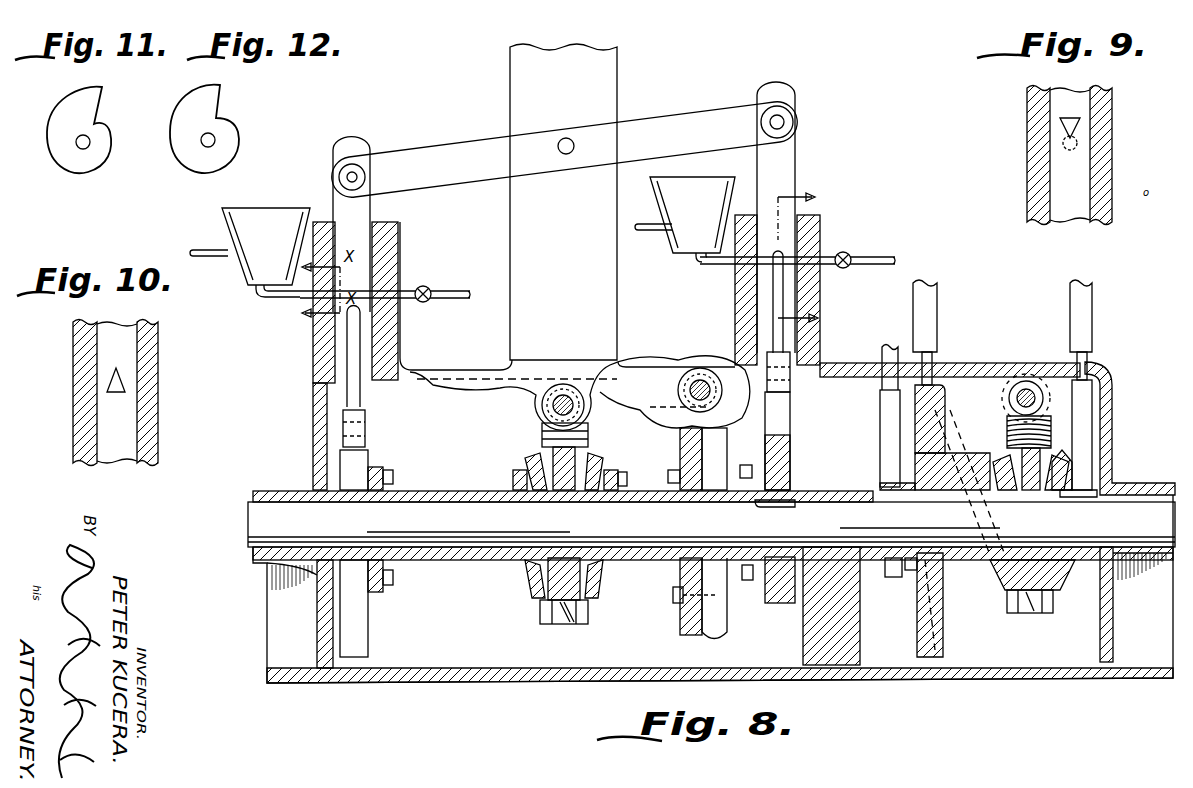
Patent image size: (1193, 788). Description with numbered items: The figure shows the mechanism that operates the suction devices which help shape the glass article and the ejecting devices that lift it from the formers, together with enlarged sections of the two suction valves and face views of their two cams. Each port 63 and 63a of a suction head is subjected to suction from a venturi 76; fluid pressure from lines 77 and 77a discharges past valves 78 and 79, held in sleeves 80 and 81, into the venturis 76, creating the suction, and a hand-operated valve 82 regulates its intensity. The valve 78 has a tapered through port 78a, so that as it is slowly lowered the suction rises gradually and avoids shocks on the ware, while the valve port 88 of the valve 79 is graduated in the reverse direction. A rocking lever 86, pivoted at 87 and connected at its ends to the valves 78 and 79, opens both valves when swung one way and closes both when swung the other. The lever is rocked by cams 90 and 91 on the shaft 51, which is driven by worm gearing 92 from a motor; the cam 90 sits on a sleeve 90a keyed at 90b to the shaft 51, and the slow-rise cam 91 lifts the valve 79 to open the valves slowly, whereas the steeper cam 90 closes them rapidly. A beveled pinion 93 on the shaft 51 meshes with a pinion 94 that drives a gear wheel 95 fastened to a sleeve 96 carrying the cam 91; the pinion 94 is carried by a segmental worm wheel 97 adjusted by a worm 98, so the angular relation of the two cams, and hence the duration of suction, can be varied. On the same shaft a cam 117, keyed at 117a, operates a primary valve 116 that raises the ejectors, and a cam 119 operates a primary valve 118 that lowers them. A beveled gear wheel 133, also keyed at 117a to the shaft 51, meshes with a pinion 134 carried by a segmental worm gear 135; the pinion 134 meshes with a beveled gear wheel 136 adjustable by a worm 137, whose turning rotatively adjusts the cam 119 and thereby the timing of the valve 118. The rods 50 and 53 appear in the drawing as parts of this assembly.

In FIG. 8, the rod 50 is at (880, 455).
In FIG. 8, the shaft 51 is at (705, 524).
In FIG. 8, the rod 53 is at (882, 347).
In FIG. 8, the port 63 is at (657, 234).
In FIG. 8, the port 63a is at (213, 250).
In FIG. 8, the venturi 76 is at (712, 192).
In FIG. 8, the fluid pressure line 77 is at (820, 255).
In FIG. 9, the fluid pressure line 77 is at (1085, 138).
In FIG. 8, the fluid pressure line 77a is at (425, 286).
In FIG. 8, the valve 78 is at (790, 178).
In FIG. 9, the valve 78 is at (1075, 160).
In FIG. 9, the through port 78a is at (1085, 122).
In FIG. 8, the valve 79 is at (385, 238).
In FIG. 10, the valve 79 is at (128, 410).
In FIG. 8, the sleeve 80 is at (822, 295).
In FIG. 8, the sleeve 81 is at (385, 322).
In FIG. 8, the hand-operated valve 82 is at (851, 255).
In FIG. 8, the rocking lever 86 is at (447, 152).
In FIG. 8, the pivot 87 is at (570, 140).
In FIG. 10, the valve port 88 is at (128, 370).
In FIG. 8, the cam 90 is at (791, 425).
In FIG. 11, the cam 90 is at (96, 118).
In FIG. 8, the sleeve 90a is at (745, 466).
In FIG. 8, the key 90b is at (795, 505).
In FIG. 8, the cam 91 is at (370, 453).
In FIG. 12, the cam 91 is at (228, 113).
In FIG. 8, the worm gearing 92 is at (668, 405).
In FIG. 8, the beveled pinion 93 is at (616, 470).
In FIG. 8, the pinion 94 is at (595, 602).
In FIG. 8, the gear wheel 95 is at (535, 580).
In FIG. 8, the sleeve 96 is at (422, 556).
In FIG. 8, the segmental worm wheel 97 is at (542, 432).
In FIG. 8, the worm 98 is at (542, 405).
In FIG. 8, the primary valve 116 is at (1092, 300).
In FIG. 8, the cam 117 is at (1095, 392).
In FIG. 8, the key 117a is at (1082, 499).
In FIG. 8, the primary valve 118 is at (938, 302).
In FIG. 8, the cam 119 is at (945, 395).
In FIG. 8, the beveled gear wheel 133 is at (1075, 455).
In FIG. 8, the pinion 134 is at (1045, 613).
In FIG. 8, the segmental worm gear 135 is at (1010, 437).
In FIG. 8, the beveled gear wheel 136 is at (978, 588).
In FIG. 8, the worm 137 is at (1010, 378).